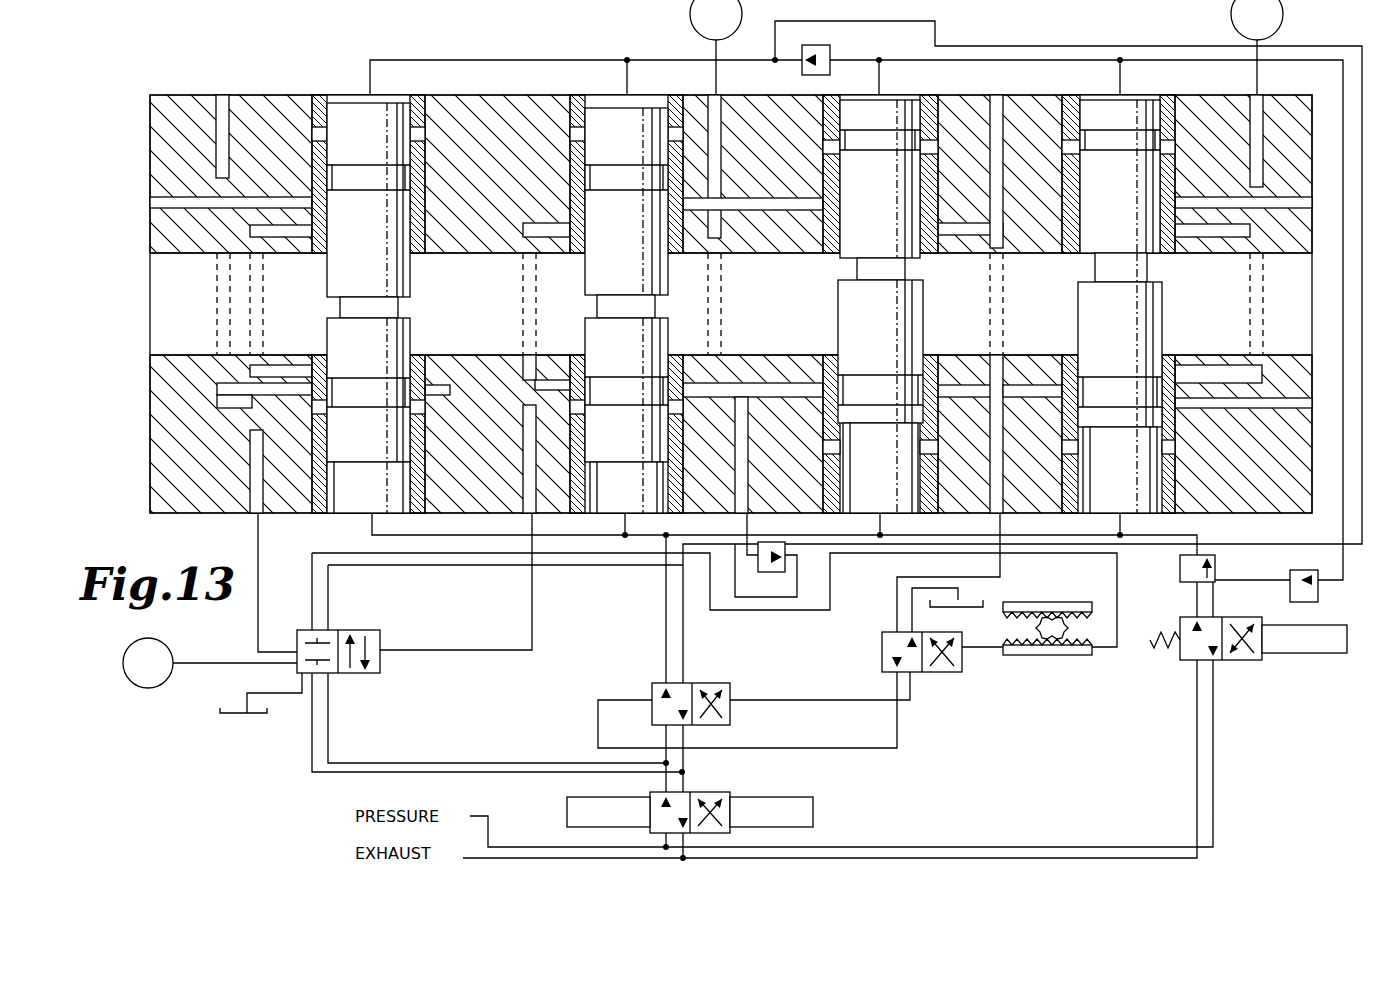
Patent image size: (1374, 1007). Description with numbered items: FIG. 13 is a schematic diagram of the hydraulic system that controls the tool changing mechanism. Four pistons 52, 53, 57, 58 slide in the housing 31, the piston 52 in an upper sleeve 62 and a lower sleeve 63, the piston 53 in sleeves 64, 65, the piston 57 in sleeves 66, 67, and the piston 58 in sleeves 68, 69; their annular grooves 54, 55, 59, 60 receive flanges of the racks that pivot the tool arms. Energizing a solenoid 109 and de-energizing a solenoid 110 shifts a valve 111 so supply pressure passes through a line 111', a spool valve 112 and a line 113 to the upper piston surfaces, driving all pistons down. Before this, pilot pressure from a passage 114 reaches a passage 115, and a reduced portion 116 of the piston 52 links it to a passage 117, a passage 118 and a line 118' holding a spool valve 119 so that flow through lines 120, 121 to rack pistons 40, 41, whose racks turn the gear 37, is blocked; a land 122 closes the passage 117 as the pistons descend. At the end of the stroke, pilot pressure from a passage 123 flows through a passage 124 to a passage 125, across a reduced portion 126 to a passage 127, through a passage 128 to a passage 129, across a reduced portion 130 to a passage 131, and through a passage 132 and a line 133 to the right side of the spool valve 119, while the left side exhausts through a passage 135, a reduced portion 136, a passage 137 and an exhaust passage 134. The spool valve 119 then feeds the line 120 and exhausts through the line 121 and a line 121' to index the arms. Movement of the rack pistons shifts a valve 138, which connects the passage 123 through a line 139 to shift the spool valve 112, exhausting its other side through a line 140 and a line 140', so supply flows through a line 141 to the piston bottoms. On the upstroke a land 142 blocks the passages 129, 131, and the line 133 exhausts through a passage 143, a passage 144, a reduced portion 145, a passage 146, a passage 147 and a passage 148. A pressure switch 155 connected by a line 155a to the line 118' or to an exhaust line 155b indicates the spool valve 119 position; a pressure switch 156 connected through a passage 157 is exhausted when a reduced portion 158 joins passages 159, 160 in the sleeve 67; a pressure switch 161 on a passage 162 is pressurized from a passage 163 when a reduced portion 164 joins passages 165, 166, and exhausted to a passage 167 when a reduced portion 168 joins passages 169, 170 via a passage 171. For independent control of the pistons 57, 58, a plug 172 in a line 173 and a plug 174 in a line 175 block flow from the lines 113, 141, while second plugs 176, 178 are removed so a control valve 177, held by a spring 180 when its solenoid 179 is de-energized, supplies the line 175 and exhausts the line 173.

The housing 31 is at (148, 396).
The gear 37 is at (1070, 630).
The rack piston 40 is at (1082, 655).
The rack piston 41 is at (1035, 602).
The piston 52 is at (327, 290).
The piston 53 is at (585, 275).
The annular groove 54 is at (400, 305).
The annular groove 55 is at (658, 300).
The piston 57 is at (838, 297).
The piston 58 is at (1078, 311).
The annular groove 59 is at (905, 268).
The annular groove 60 is at (1095, 262).
The sleeve 62 is at (418, 97).
The sleeve 63 is at (315, 513).
The sleeve 64 is at (580, 97).
The sleeve 65 is at (572, 513).
The sleeve 66 is at (833, 97).
The sleeve 67 is at (935, 513).
The sleeve 68 is at (1170, 97).
The sleeve 69 is at (1172, 513).
The solenoid 109 is at (815, 812).
The solenoid 110 is at (567, 815).
The valve 111 is at (739, 800).
The line 111' is at (713, 775).
The spool valve 112 is at (728, 686).
The line 113 is at (936, 30).
The passage 114 is at (228, 94).
The passage 115 is at (325, 400).
The reduced portion 116 is at (432, 390).
The passage 117 is at (318, 372).
The passage 118 is at (226, 483).
The line 118' is at (246, 582).
The spool valve 119 is at (378, 630).
The line 120 is at (310, 590).
The line 121 is at (497, 664).
The line 121' is at (620, 778).
The land 122 is at (412, 330).
The passage 123 is at (1003, 98).
The passage 124 is at (962, 222).
The passage 125 is at (905, 230).
The reduced portion 126 is at (823, 148).
The passage 127 is at (843, 203).
The passage 128 is at (752, 198).
The passage 129 is at (587, 208).
The reduced portion 130 is at (570, 178).
The passage 131 is at (587, 233).
The passage 132 is at (523, 512).
The line 133 is at (534, 604).
The exhaust passage 134 is at (150, 203).
The passage 135 is at (320, 233).
The reduced portion 136 is at (312, 178).
The passage 137 is at (330, 208).
The valve 138 is at (958, 672).
The line 139 is at (838, 698).
The line 140 is at (799, 630).
The line 140' is at (948, 613).
The line 141 is at (664, 625).
The land 142 is at (650, 274).
The passage 143 is at (545, 355).
The passage 144 is at (588, 372).
The reduced portion 145 is at (580, 387).
The passage 146 is at (675, 392).
The passage 147 is at (720, 400).
The passage 148 is at (752, 514).
The pressure switch 155 is at (123, 663).
The line 155a is at (193, 666).
The line 155b is at (290, 698).
The pressure switch 156 is at (690, 14).
The passage 157 is at (722, 100).
The reduced portion 158 is at (930, 391).
The passage 159 is at (840, 370).
The passage 160 is at (848, 402).
The pressure switch 161 is at (1231, 14).
The passage 162 is at (1263, 105).
The passage 163 is at (1312, 404).
The reduced portion 164 is at (1062, 391).
The passage 165 is at (1160, 372).
The passage 166 is at (1160, 398).
The pilot exhaust passage 167 is at (1300, 203).
The reduced portion 168 is at (1062, 148).
The passage 169 is at (1165, 203).
The passage 170 is at (1165, 230).
The passage 171 is at (1222, 237).
The plug 172 is at (832, 52).
The line 173 is at (978, 62).
The plug 174 is at (755, 542).
The line 175 is at (1025, 540).
The second plug 176 is at (1295, 570).
The control valve 177 is at (1250, 662).
The second plug 178 is at (1180, 578).
The solenoid 179 is at (1310, 655).
The spring 180 is at (1160, 650).